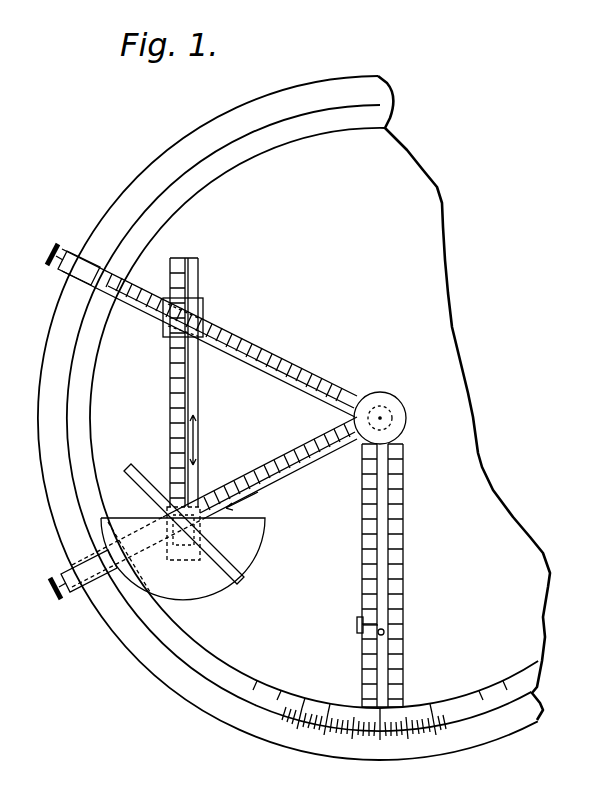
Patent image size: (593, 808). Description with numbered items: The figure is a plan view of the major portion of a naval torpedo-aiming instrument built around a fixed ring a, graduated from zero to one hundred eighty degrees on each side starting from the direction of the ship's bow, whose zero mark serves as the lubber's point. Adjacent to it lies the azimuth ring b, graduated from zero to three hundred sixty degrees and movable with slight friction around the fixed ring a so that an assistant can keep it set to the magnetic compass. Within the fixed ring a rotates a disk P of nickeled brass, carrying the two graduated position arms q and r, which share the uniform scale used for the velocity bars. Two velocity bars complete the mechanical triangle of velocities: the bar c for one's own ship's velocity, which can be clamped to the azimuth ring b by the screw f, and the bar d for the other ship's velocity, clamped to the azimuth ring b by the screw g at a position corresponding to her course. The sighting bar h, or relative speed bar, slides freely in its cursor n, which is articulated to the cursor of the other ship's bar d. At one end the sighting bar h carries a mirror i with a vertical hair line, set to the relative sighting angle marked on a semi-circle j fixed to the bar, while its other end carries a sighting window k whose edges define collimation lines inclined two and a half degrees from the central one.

The disk P is at (396, 398).
The fixed ring a is at (302, 431).
The azimuth ring b is at (288, 418).
The velocity bar c is at (214, 502).
The velocity bar d is at (209, 333).
The screw f is at (78, 577).
The screw g is at (65, 264).
The sighting bar h is at (169, 368).
The mirror i is at (181, 515).
The semi-circle j is at (183, 546).
The sighting window k is at (183, 559).
The cursor n is at (189, 317).
The position arm q is at (363, 636).
The position arm r is at (386, 578).